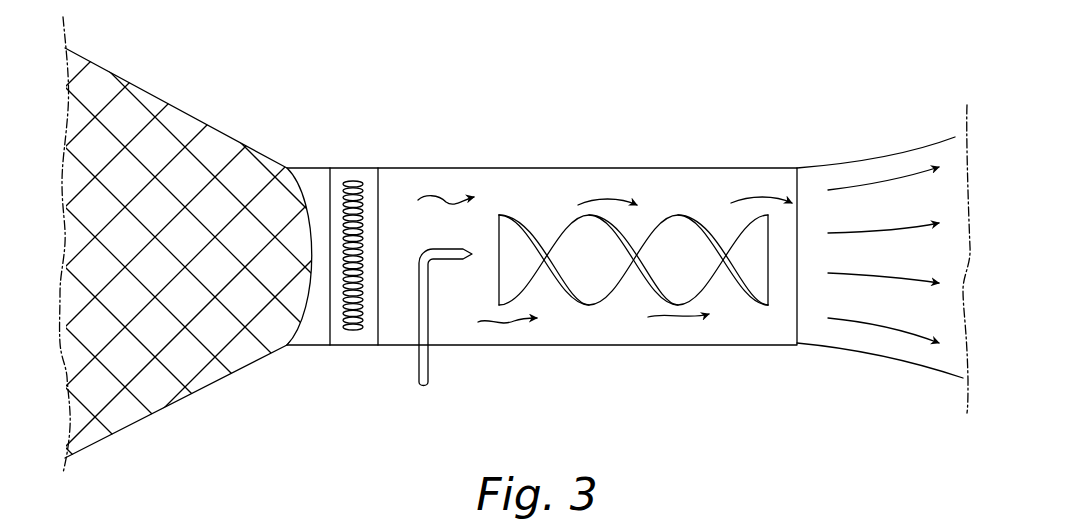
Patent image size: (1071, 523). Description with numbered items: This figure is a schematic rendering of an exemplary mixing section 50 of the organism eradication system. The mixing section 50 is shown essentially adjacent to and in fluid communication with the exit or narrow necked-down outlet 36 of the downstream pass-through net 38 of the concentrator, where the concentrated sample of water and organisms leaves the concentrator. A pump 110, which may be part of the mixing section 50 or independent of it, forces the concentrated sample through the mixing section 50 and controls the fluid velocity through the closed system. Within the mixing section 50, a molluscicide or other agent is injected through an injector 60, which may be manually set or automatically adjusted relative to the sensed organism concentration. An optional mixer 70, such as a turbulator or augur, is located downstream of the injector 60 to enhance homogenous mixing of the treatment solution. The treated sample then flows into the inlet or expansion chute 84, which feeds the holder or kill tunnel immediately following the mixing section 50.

The outlet 36 is at (303, 134).
The downstream pass-through net 38 is at (145, 95).
The mixing section 50 is at (617, 94).
The injector 60 is at (428, 370).
The mixer 70 is at (595, 303).
The expansion chute 84 is at (857, 163).
The pump 110 is at (355, 330).